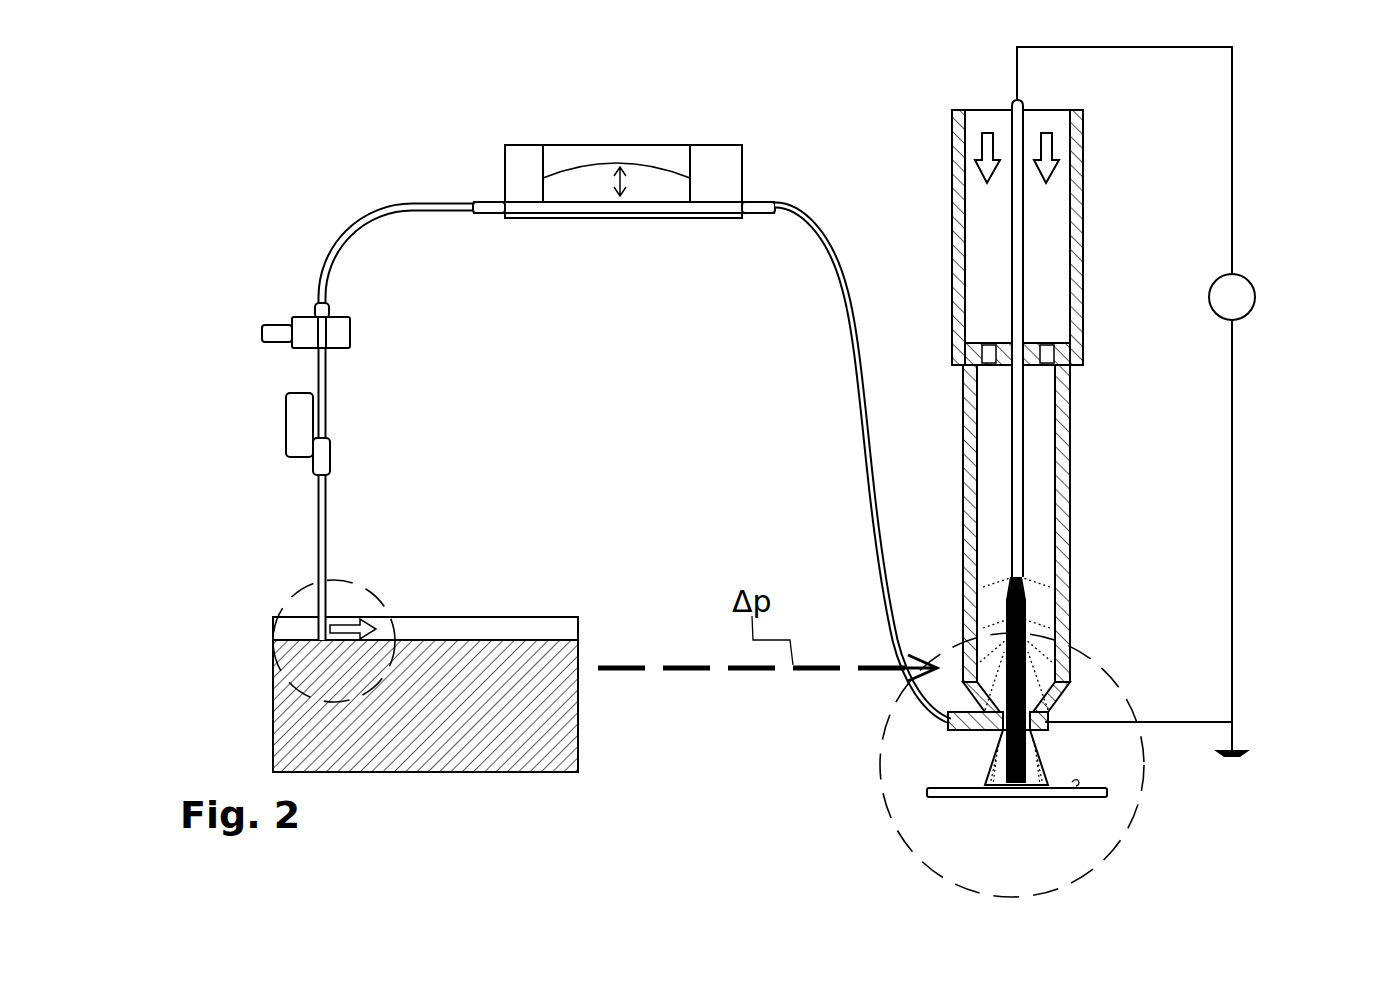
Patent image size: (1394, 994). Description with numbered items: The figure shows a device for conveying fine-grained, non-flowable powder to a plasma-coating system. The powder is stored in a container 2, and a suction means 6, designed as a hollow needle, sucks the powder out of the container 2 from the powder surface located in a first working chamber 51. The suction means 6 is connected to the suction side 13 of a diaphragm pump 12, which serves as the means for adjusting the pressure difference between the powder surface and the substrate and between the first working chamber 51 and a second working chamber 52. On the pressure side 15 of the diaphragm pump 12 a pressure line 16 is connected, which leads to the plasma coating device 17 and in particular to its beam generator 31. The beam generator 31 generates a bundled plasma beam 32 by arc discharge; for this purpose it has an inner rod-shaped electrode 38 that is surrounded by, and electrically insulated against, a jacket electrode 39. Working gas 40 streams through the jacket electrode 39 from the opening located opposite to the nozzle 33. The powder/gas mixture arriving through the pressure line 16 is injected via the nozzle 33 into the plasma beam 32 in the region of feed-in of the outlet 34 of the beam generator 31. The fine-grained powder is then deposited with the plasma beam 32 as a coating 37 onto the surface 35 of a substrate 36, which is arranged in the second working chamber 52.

The container 2 is at (578, 745).
The suction means 6 is at (318, 545).
The diaphragm pump 12 is at (628, 212).
The suction side 13 is at (497, 212).
The pressure side 15 is at (758, 212).
The pressure line 16 is at (860, 388).
The plasma coating device 17 is at (1275, 430).
The beam generator 31 is at (1041, 475).
The plasma beam 32 is at (1048, 646).
The nozzle 33 is at (985, 735).
The outlet 34 is at (1035, 735).
The surface of substrate 35 is at (1085, 795).
The substrate 36 is at (958, 795).
The coating 37 is at (1020, 798).
The inner rod-shaped electrode 38 is at (1025, 441).
The jacket electrode 39 is at (1070, 536).
The working gas 40 is at (1050, 148).
The first working chamber 51 is at (352, 583).
The second working chamber 52 is at (1150, 770).